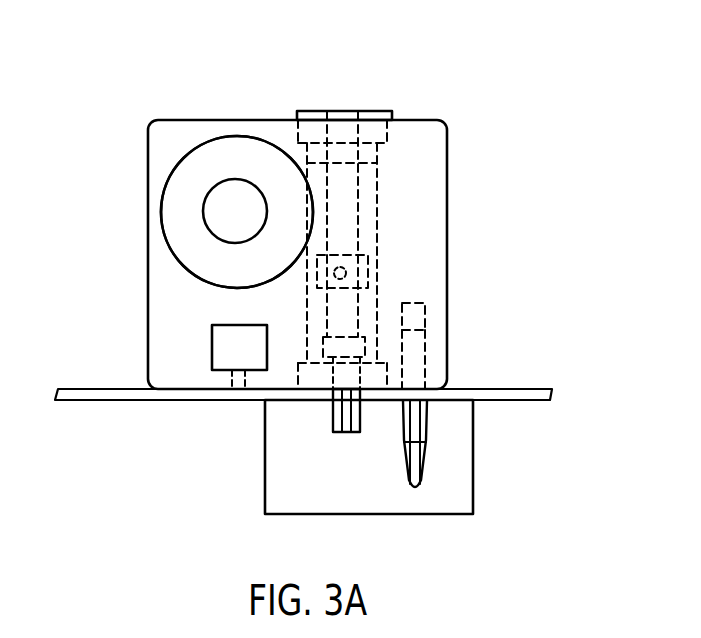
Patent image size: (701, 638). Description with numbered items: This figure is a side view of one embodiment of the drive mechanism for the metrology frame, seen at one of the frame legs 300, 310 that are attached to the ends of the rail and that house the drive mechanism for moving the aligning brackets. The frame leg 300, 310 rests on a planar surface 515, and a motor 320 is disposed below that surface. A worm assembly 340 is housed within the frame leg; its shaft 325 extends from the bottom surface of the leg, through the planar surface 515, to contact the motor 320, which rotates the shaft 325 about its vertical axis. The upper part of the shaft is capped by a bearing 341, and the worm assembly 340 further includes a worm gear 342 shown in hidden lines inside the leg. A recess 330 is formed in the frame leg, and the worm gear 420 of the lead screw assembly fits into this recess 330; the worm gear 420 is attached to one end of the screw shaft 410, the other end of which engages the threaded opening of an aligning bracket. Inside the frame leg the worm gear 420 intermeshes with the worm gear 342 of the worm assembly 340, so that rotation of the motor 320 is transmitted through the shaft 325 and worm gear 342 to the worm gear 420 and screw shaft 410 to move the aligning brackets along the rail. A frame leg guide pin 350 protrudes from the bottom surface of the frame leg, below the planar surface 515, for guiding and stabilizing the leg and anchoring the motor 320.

The frame leg 300 is at (242, 254).
The frame leg 310 is at (297, 254).
The recess 330 is at (176, 256).
The screw shaft 410 is at (233, 198).
The worm gear 420 is at (198, 168).
The bearing 341 is at (365, 110).
The worm gear 342 is at (380, 180).
The worm assembly 340 is at (392, 236).
The planar surface 515 is at (553, 389).
The shaft 325 is at (333, 413).
The frame leg guide pin 350 is at (427, 425).
The motor 320 is at (458, 480).